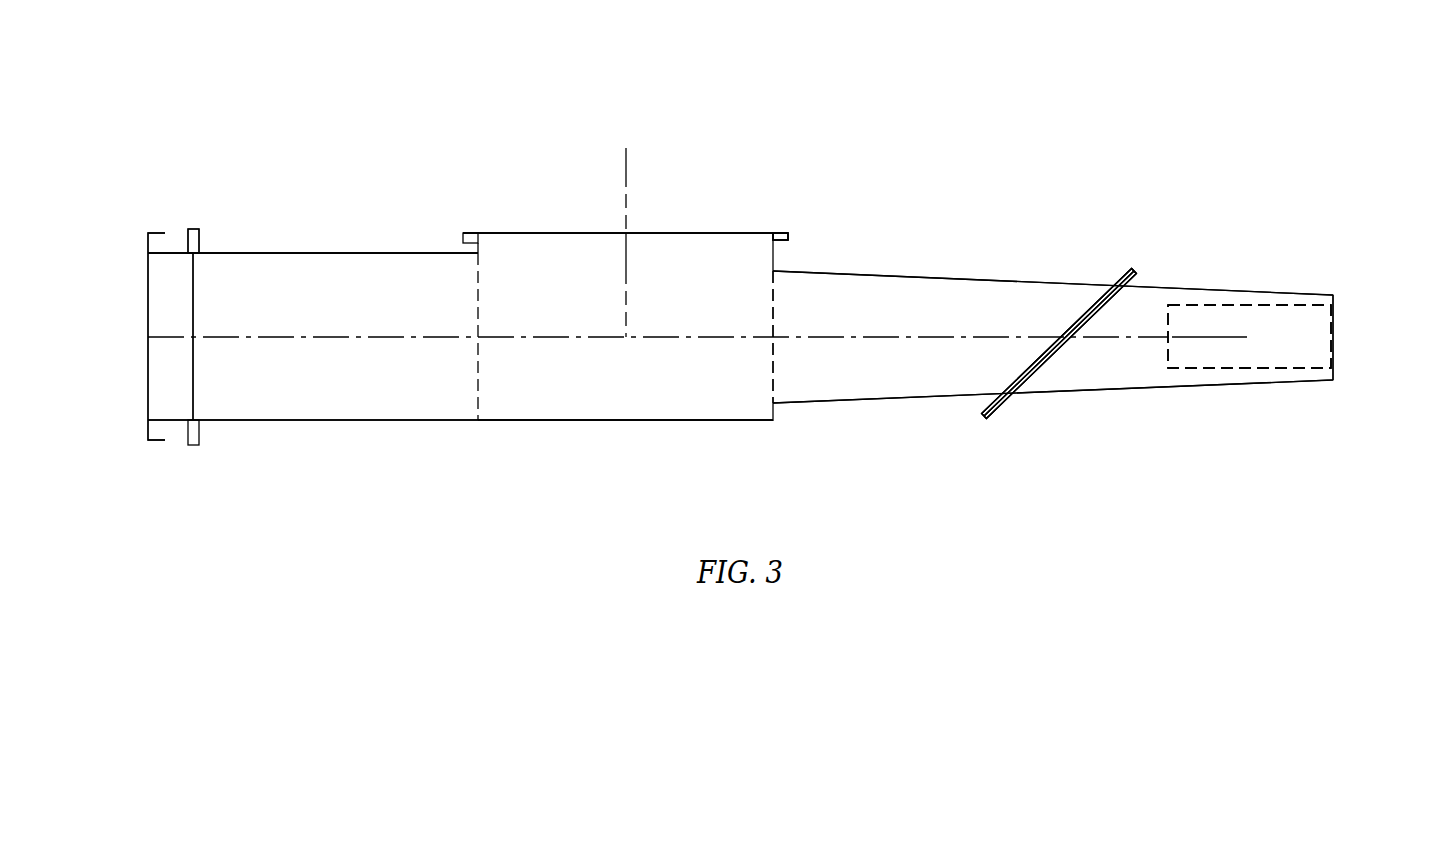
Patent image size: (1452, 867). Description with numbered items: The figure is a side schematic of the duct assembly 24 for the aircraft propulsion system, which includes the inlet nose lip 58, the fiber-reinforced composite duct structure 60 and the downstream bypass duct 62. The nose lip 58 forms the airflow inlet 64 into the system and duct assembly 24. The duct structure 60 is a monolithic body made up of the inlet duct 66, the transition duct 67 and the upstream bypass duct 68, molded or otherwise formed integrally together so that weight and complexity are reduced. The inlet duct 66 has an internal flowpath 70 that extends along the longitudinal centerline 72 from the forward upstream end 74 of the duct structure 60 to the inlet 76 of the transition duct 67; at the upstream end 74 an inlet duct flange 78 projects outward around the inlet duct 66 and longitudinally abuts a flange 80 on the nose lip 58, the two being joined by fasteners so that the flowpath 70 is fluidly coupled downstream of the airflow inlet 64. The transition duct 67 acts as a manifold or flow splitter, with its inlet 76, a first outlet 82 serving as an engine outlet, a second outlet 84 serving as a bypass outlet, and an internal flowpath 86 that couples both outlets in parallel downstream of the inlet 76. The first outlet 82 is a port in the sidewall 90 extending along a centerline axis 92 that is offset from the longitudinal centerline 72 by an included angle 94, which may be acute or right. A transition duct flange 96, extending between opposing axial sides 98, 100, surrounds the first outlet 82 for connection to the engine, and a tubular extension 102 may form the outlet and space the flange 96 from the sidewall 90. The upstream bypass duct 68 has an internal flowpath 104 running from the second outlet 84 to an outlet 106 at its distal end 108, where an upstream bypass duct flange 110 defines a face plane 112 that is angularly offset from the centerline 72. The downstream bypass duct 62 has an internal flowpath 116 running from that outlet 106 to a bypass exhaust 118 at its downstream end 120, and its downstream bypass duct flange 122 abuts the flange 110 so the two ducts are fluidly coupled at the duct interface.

The duct assembly 24 is at (1024, 148).
The inlet nose lip 58 is at (169, 228).
The fiber-reinforced composite duct structure 60 is at (352, 225).
The downstream bypass duct 62 is at (1236, 277).
The airflow inlet 64 is at (148, 307).
The inlet duct 66 is at (338, 427).
The transition duct 67 is at (661, 430).
The upstream bypass duct 68 is at (896, 407).
The internal flowpath 70 is at (330, 316).
The longitudinal centerline 72 is at (372, 345).
The upstream end 74 is at (192, 387).
The transition duct inlet 76 is at (478, 393).
The inlet duct flange 78 is at (203, 240).
The flange 80 is at (185, 243).
The first outlet 82 is at (563, 233).
The second outlet 84 is at (773, 380).
The internal flowpath 86 is at (530, 309).
The sidewall 90 is at (423, 253).
The centerline axis 92 is at (628, 165).
The included angle 94 is at (625, 265).
The transition duct flange 96 is at (787, 213).
The axial side 98 is at (782, 233).
The axial side 100 is at (781, 240).
The tubular extension 102 is at (480, 243).
The internal flowpath 104 is at (903, 320).
The outlet 106 is at (1027, 388).
The distal end 108 is at (1059, 343).
The upstream bypass duct flange 110 is at (1073, 308).
The face plane 112 is at (1054, 360).
The internal flowpath 116 is at (1152, 327).
The bypass exhaust 118 is at (1276, 370).
The downstream end 120 is at (1333, 332).
The downstream bypass duct flange 122 is at (1102, 326).